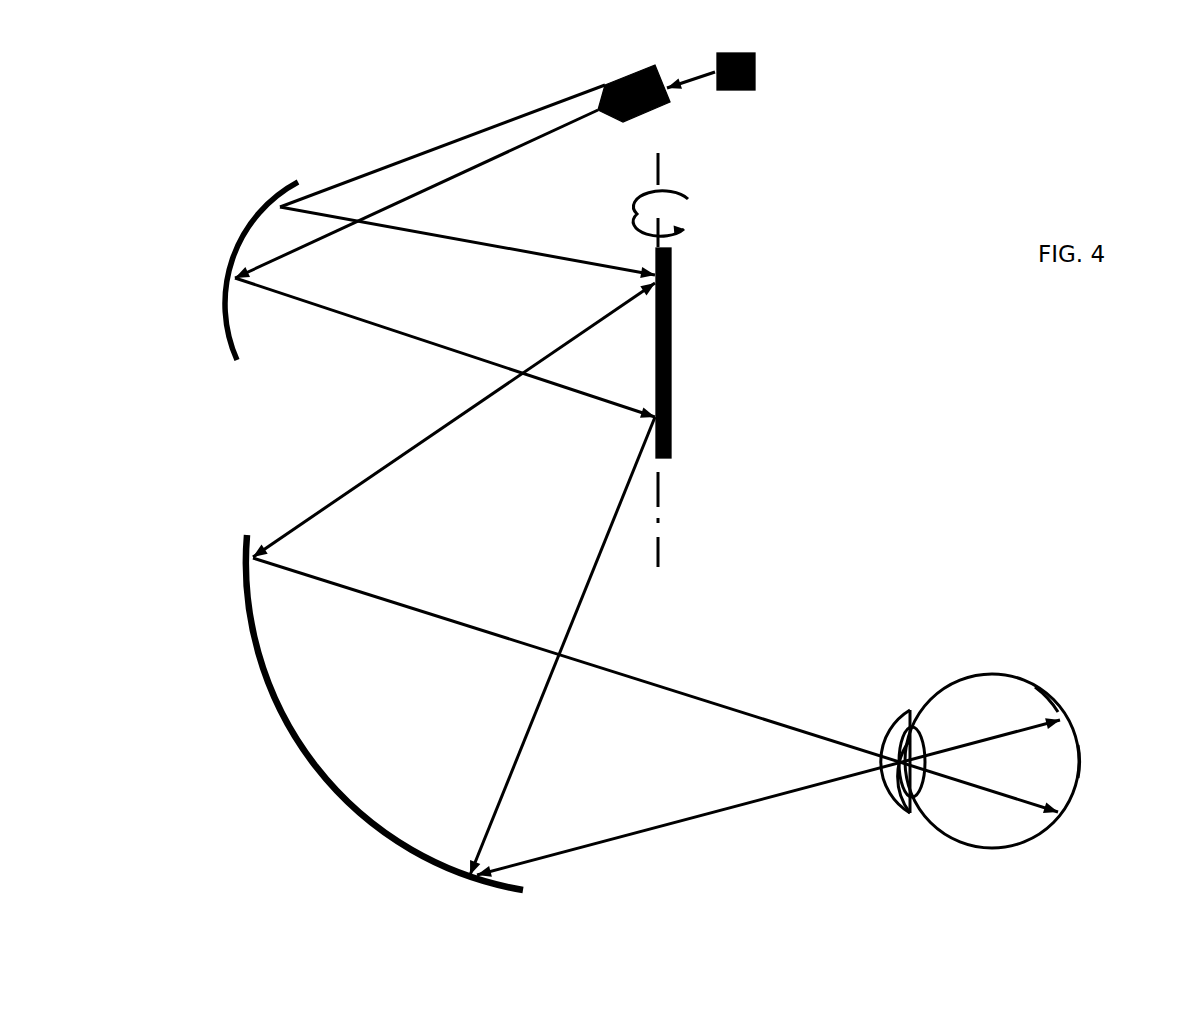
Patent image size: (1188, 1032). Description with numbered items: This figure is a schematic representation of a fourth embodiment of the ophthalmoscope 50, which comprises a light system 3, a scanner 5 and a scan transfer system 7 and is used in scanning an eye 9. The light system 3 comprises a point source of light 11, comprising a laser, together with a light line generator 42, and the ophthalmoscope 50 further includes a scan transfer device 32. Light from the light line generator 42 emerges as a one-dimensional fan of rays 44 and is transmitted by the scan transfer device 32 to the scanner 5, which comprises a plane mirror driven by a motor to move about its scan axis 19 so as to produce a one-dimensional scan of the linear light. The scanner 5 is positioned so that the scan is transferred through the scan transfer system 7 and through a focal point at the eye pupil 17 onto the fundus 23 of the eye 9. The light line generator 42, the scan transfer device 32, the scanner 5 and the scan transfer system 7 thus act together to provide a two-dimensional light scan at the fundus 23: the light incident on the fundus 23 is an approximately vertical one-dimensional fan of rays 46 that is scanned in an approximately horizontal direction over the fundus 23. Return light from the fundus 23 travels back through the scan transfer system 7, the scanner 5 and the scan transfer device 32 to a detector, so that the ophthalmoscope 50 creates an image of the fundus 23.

The light system 3 is at (718, 110).
The scanner 5 is at (672, 353).
The scan transfer system 7 is at (273, 687).
The eye 9 is at (940, 673).
The point source of light 11 is at (755, 72).
The eye pupil 17 is at (873, 812).
The scan axis 19 is at (660, 557).
The fundus 23 is at (1048, 695).
The scan transfer device 32 is at (245, 244).
The light line generator 42 is at (605, 85).
The 1D fan of rays 44 is at (413, 148).
The 1D fan of rays 46 is at (1078, 763).
The ophthalmoscope 50 is at (955, 457).